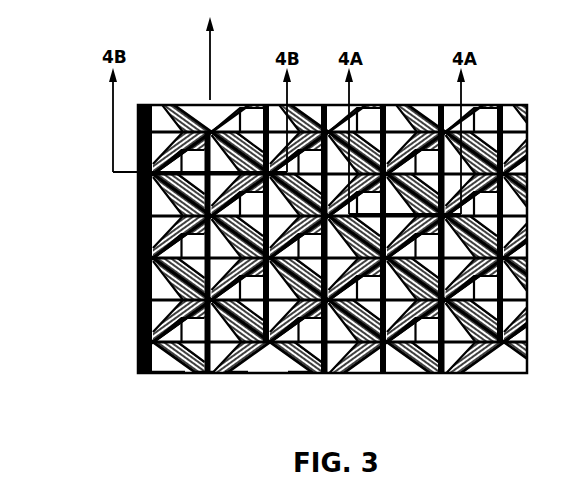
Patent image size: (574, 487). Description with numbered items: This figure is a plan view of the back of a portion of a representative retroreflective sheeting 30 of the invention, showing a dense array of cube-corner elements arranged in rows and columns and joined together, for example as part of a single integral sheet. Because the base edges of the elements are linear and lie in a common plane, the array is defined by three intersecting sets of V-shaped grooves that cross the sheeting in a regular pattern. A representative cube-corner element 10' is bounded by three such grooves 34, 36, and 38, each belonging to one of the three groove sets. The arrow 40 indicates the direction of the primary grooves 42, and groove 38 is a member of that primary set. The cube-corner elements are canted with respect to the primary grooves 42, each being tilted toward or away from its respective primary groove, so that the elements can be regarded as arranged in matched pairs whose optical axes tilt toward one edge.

The retroreflective sheeting 30 is at (100, 217).
The arrow 40 is at (213, 84).
The primary grooves 42 is at (332, 103).
The V-shaped groove 34 is at (170, 373).
The cube-corner element 10' is at (198, 398).
The V-shaped groove 36 is at (235, 375).
The V-shaped groove 38 is at (298, 373).